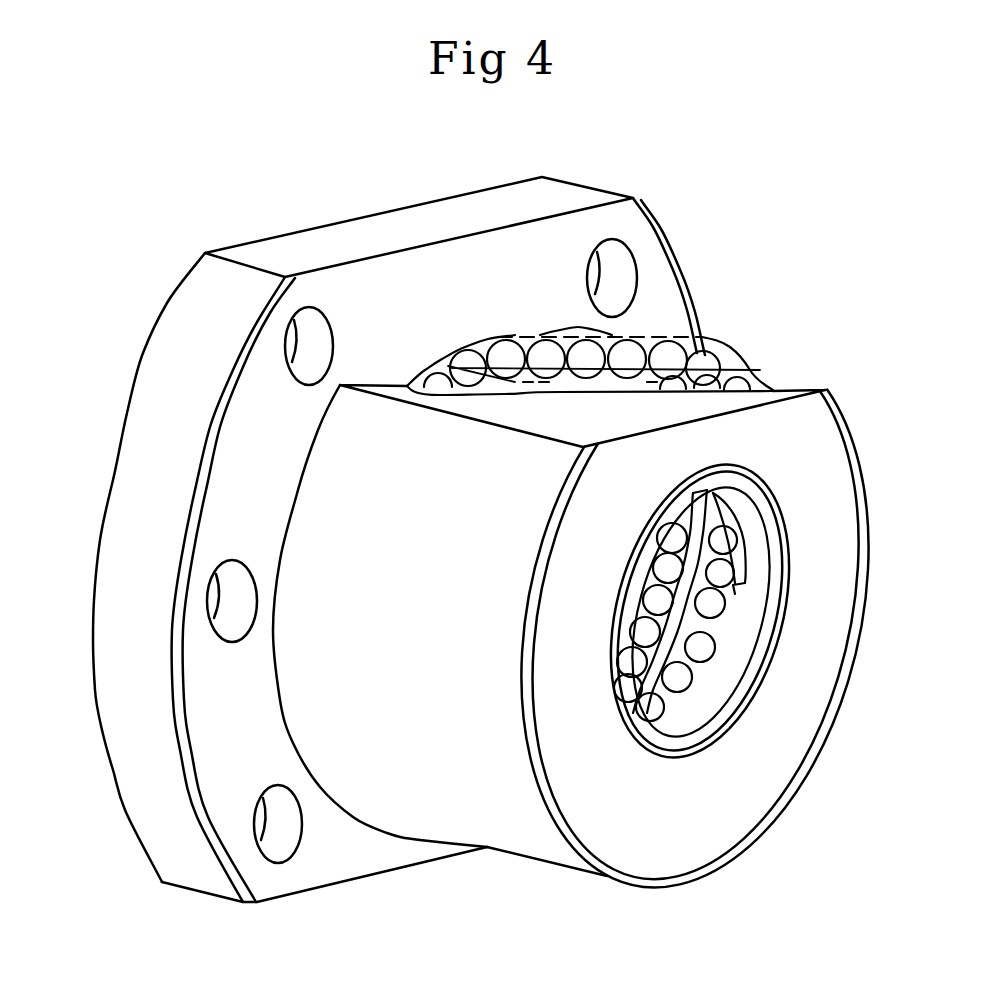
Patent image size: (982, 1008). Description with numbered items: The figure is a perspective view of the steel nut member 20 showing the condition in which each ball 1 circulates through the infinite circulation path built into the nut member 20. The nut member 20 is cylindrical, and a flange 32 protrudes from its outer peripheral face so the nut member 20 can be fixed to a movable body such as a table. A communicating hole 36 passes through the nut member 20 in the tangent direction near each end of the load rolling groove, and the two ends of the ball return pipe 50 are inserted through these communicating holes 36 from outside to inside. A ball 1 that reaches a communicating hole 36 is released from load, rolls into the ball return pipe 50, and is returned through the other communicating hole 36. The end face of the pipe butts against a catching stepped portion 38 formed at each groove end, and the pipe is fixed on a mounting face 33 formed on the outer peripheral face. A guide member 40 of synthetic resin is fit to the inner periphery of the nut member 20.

The ball 1 is at (650, 330).
The nut member 20 is at (457, 818).
The flange 32 is at (145, 423).
The mounting face 33 is at (802, 393).
The communicating hole 36 is at (412, 376).
The catching stepped portion 38 is at (703, 557).
The guide member 40 is at (760, 634).
The ball return pipe 50 is at (706, 337).